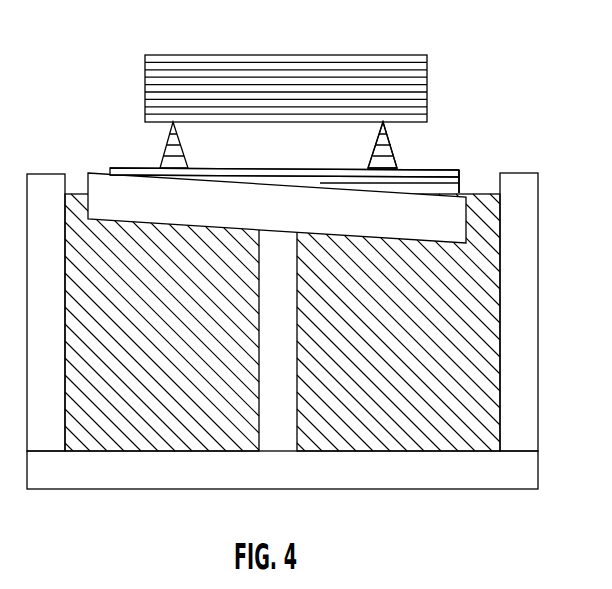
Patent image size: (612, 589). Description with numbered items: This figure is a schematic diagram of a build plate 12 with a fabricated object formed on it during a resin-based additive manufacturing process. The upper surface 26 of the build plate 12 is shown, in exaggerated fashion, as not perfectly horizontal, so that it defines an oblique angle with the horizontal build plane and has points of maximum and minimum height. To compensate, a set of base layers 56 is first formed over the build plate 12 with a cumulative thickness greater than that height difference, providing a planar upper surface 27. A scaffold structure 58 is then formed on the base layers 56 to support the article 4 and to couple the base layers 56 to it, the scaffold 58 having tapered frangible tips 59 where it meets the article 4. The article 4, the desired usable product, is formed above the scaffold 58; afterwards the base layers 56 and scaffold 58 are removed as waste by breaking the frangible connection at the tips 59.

The article 4 is at (204, 72).
The build plate 12 is at (468, 218).
The upper surface 26 is at (103, 170).
The planar upper surface 27 is at (233, 168).
The base layers 56 is at (462, 182).
The scaffold structure 58 is at (387, 158).
The frangible tip 59 is at (383, 122).